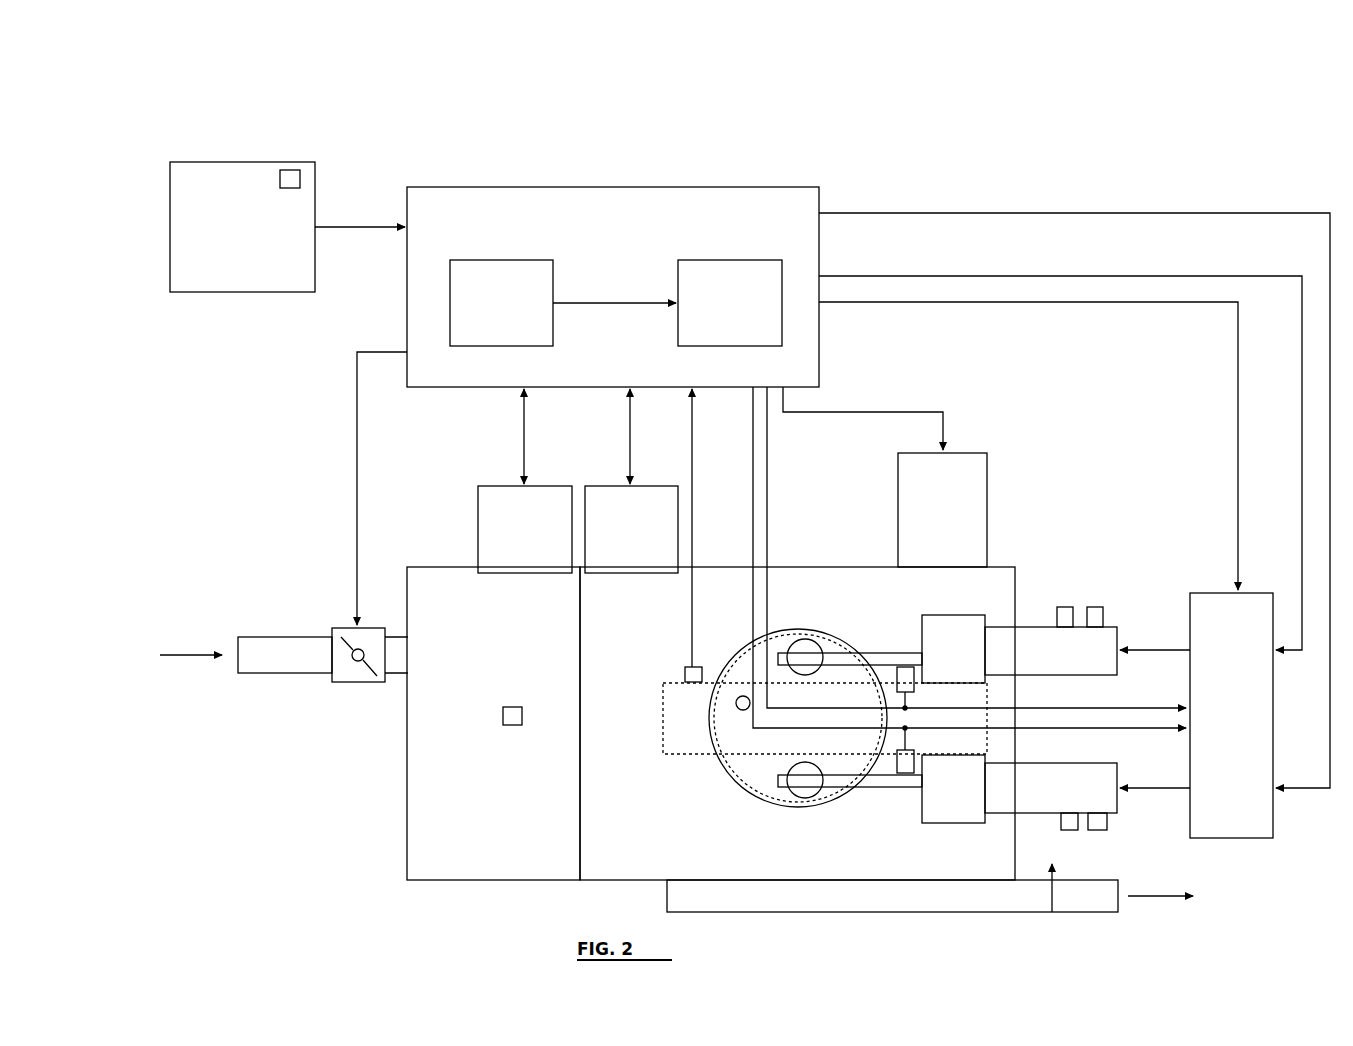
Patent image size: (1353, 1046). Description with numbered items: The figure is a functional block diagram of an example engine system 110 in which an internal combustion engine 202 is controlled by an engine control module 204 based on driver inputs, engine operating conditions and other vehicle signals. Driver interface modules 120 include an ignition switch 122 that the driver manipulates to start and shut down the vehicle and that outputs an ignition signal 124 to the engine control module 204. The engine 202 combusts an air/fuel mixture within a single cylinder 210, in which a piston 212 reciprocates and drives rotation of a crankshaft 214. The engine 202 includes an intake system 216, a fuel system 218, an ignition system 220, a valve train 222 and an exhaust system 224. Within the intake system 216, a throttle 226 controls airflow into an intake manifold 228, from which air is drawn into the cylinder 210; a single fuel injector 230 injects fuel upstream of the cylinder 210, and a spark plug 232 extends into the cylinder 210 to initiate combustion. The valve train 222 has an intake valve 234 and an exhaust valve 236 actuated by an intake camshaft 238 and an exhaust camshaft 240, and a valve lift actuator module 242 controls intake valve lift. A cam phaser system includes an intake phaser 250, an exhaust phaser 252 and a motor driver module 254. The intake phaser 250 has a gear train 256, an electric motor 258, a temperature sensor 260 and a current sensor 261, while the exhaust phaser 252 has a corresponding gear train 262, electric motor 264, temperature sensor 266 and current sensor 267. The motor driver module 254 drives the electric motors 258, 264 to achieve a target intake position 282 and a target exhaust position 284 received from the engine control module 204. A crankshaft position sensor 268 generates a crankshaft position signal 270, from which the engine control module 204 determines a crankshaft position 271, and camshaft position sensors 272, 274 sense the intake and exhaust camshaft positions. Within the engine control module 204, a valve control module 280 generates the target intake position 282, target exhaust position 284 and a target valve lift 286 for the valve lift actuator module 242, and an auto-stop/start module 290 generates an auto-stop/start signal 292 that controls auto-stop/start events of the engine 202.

The engine system 110 is at (128, 88).
The driver interface modules 120 is at (240, 162).
The ignition switch 122 is at (290, 170).
The ignition signal 124 is at (340, 227).
The internal combustion engine 202 is at (448, 920).
The engine control module 204 is at (612, 187).
The cylinder 210 is at (730, 770).
The piston 212 is at (763, 800).
The crankshaft 214 is at (663, 713).
The intake system 216 is at (258, 637).
The fuel system 218 is at (492, 486).
The ignition system 220 is at (598, 486).
The valve train 222 is at (884, 580).
The exhaust system 224 is at (895, 912).
The throttle 226 is at (345, 628).
The intake manifold 228 is at (407, 830).
The fuel injector 230 is at (513, 707).
The spark plug 232 is at (736, 706).
The intake valve 234 is at (805, 639).
The exhaust valve 236 is at (805, 798).
The intake camshaft 238 is at (905, 653).
The exhaust camshaft 240 is at (905, 787).
The valve lift actuator module 242 is at (968, 453).
The intake phaser 250 is at (1058, 545).
The exhaust phaser 252 is at (1052, 912).
The motor driver module 254 is at (1273, 830).
The gear train 256 is at (955, 615).
The electric motor 258 is at (1117, 672).
The temperature sensor 260 is at (1100, 607).
The current sensor 261 is at (1057, 607).
The gear train 262 is at (952, 823).
The electric motor 264 is at (1117, 767).
The temperature sensor 266 is at (1105, 830).
The current sensor 267 is at (1070, 830).
The crankshaft position sensor 268 is at (688, 665).
The crankshaft position signal 270 is at (690, 470).
The crankshaft position 271 is at (1240, 420).
The camshaft position sensor 272 is at (895, 680).
The camshaft position sensor 274 is at (895, 768).
The valve control module 280 is at (730, 260).
The target intake position 282 is at (860, 213).
The target exhaust position 284 is at (860, 276).
The target valve lift 286 is at (850, 412).
The auto-stop/start module 290 is at (500, 260).
The auto-stop/start signal 292 is at (585, 303).